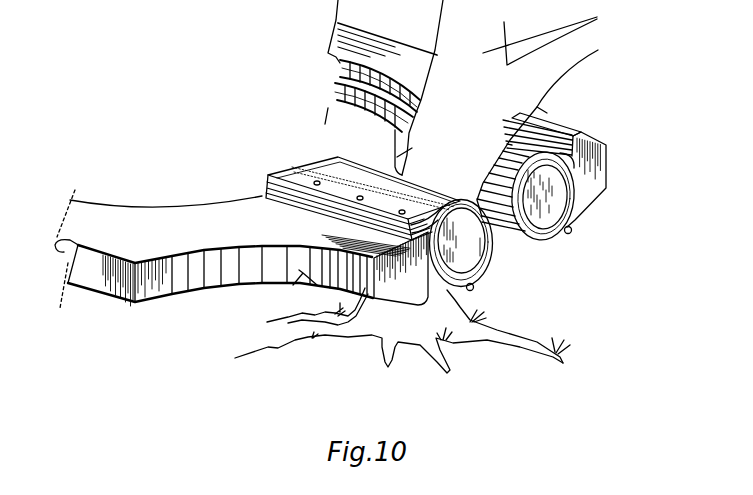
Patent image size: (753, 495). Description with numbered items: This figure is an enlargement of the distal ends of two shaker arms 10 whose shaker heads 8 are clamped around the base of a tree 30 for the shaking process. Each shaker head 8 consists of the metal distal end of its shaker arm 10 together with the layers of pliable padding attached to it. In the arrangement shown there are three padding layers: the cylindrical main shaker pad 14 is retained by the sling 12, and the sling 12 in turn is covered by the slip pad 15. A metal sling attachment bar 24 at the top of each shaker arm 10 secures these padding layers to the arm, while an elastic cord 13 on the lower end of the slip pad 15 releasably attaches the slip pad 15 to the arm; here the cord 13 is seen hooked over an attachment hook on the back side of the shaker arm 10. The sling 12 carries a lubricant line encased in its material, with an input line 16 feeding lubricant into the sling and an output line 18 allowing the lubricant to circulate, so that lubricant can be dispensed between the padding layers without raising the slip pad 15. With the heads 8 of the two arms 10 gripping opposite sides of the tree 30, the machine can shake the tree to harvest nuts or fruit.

The shaker head 8 is at (312, 176).
The shaker arm 10 is at (210, 228).
The sling 12 is at (485, 266).
The elastic cord 13 is at (291, 284).
The main shaker pad 14 is at (465, 252).
The slip pad 15 is at (474, 290).
The input line 16 is at (340, 74).
The output line 18 is at (335, 84).
The sling attachment bar 24 is at (268, 175).
The tree 30 is at (505, 22).